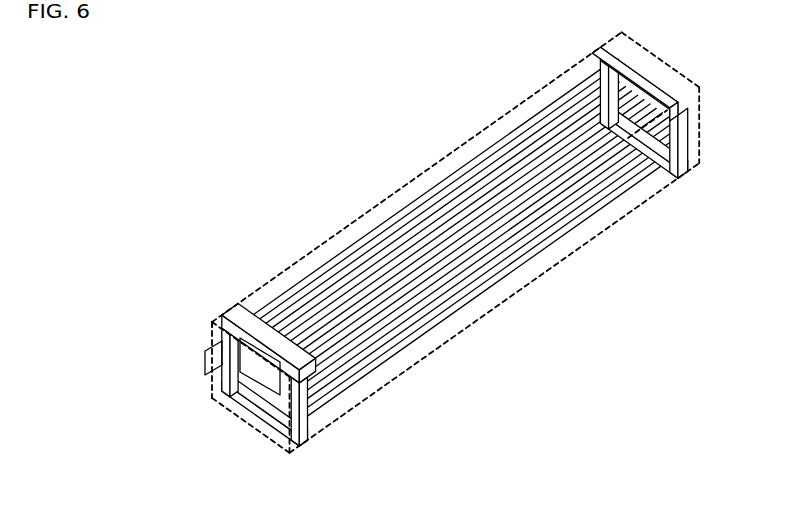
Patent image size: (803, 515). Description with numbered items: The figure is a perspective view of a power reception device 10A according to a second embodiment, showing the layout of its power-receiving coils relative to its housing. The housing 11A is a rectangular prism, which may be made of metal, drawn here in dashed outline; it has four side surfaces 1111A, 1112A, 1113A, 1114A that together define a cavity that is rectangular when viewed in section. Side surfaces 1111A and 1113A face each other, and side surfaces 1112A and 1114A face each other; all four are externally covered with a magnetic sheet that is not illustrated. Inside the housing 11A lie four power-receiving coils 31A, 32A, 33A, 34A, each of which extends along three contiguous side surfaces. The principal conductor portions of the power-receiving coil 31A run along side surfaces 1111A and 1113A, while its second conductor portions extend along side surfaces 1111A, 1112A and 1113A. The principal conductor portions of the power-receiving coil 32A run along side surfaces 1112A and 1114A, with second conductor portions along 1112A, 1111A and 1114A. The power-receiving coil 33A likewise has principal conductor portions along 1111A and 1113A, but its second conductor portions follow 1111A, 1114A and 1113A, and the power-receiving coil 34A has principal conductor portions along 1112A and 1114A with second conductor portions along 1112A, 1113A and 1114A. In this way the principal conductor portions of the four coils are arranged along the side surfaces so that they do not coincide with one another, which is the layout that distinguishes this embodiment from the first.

The power reception device 10A is at (308, 111).
The housing 11A is at (409, 265).
The side surface 1111A is at (495, 308).
The side surface 1112A is at (251, 448).
The side surface 1113A is at (166, 312).
The side surface 1114A is at (417, 177).
The power-receiving coil 31A is at (594, 224).
The power-receiving coil 32A is at (372, 257).
The power-receiving coil 33A is at (622, 183).
The power-receiving coil 34A is at (530, 123).